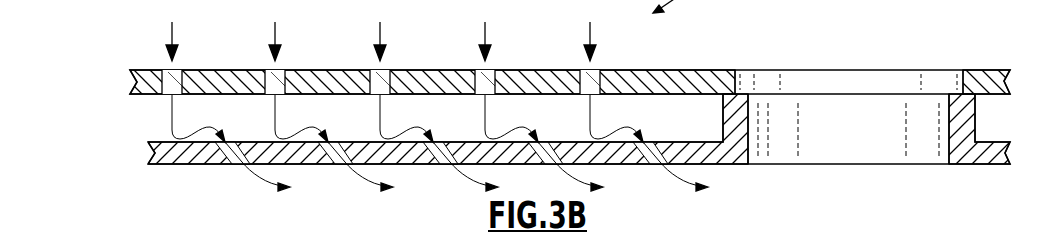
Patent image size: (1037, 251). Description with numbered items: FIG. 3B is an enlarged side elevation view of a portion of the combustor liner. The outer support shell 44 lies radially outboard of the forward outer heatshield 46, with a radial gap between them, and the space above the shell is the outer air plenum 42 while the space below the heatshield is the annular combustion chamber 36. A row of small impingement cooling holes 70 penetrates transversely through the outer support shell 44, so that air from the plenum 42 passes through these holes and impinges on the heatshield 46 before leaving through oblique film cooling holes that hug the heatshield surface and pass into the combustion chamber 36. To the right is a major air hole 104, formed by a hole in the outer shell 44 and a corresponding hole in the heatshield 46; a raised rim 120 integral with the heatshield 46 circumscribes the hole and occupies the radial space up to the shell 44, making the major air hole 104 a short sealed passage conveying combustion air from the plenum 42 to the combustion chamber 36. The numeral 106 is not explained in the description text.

The annular combustion chamber 36 is at (442, 208).
The outer air plenum 42 is at (448, 20).
The outer support shell 44 is at (546, 69).
The forward outer heatshield 46 is at (551, 139).
The impingement cooling holes 70 is at (381, 68).
The major air holes 104 is at (849, 52).
The upper component 106 is at (52, 0).
The raised rim 120 is at (729, 108).